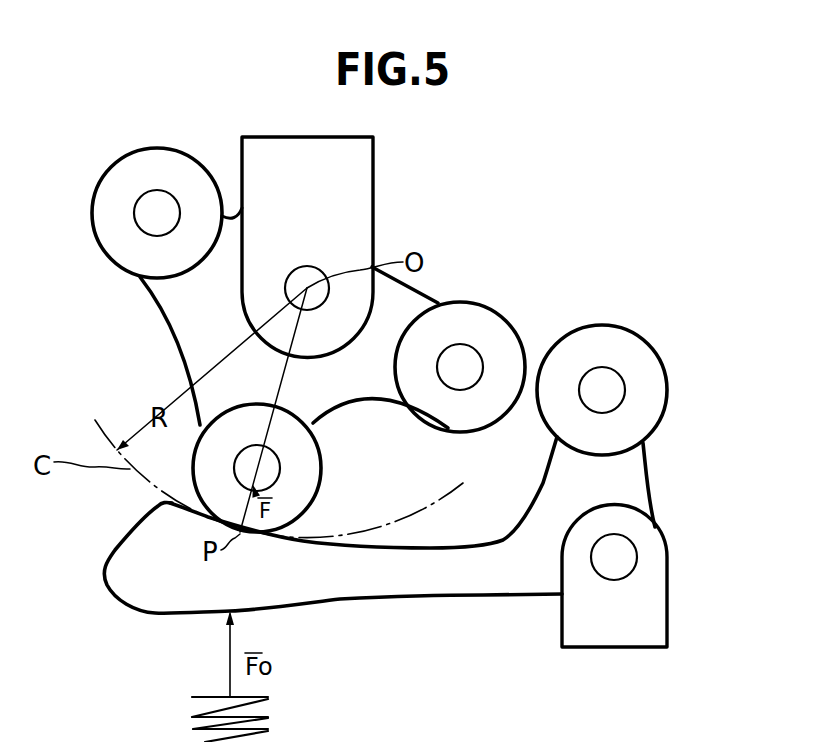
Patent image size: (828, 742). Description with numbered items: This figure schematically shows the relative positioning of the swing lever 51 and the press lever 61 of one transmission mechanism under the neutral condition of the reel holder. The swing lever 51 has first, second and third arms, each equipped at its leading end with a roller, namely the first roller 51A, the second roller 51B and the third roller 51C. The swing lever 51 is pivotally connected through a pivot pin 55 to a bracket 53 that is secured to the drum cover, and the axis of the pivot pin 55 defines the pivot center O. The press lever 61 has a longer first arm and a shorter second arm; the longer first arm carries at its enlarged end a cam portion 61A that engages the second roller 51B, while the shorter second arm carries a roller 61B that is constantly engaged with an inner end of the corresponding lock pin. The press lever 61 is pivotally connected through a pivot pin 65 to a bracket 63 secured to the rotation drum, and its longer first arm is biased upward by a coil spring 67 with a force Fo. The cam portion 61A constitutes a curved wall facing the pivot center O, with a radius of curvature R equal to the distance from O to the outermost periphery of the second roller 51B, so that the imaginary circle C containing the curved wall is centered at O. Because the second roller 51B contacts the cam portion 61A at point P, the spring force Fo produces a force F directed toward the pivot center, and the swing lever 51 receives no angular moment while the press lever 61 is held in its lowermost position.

The swing lever 51 is at (432, 286).
The first roller 51A is at (151, 148).
The second roller 51B is at (321, 462).
The third roller 51C is at (508, 323).
The bracket 53 is at (373, 170).
The pivot pin 55 is at (324, 271).
The press lever 61 is at (480, 606).
The cam portion 61A is at (203, 505).
The roller 61B is at (628, 331).
The bracket 63 is at (667, 555).
The pivot pin 65 is at (617, 562).
The coil spring 67 is at (192, 722).